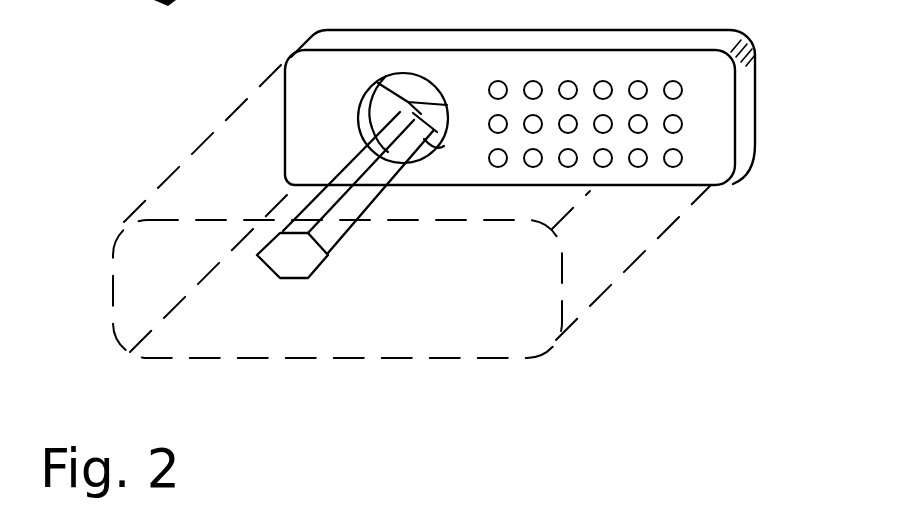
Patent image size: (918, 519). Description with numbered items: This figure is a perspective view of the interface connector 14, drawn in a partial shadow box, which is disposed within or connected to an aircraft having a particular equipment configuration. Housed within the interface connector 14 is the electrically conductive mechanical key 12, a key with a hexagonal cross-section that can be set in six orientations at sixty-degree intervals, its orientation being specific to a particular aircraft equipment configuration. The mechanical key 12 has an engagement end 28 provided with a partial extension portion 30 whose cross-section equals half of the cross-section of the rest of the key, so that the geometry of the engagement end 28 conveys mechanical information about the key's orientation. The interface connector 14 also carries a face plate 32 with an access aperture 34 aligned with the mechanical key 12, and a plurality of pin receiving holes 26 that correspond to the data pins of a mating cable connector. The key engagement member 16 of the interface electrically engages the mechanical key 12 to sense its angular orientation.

The mechanical key 12 is at (330, 228).
The interface connector 14 is at (583, 288).
The key engagement member 16 is at (212, 12).
The pin receiving holes 26 is at (690, 167).
The engagement end 28 is at (470, 86).
The partial extension portion 30 is at (372, 85).
The face plate 32 is at (757, 62).
The access aperture 34 is at (373, 125).